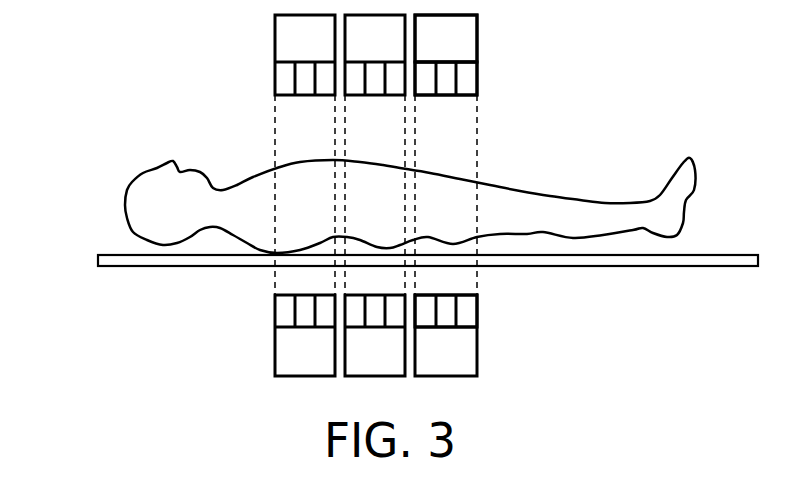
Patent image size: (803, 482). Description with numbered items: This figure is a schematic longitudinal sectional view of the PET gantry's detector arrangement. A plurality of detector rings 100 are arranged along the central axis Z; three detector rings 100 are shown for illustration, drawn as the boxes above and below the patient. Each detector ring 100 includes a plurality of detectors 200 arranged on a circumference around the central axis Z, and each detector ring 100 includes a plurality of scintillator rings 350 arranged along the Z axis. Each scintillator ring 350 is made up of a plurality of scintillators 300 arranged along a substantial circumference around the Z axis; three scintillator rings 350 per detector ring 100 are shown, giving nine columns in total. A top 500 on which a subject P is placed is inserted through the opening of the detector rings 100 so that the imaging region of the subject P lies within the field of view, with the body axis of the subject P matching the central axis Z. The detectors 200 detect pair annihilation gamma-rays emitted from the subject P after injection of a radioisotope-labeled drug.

The detector ring 100 is at (265, 122).
The detector 200 is at (272, 15).
The scintillator 300 is at (465, 35).
The scintillator ring 350 is at (479, 77).
The top 500 is at (104, 260).
The subject P is at (532, 198).
The central axis Z is at (115, 205).